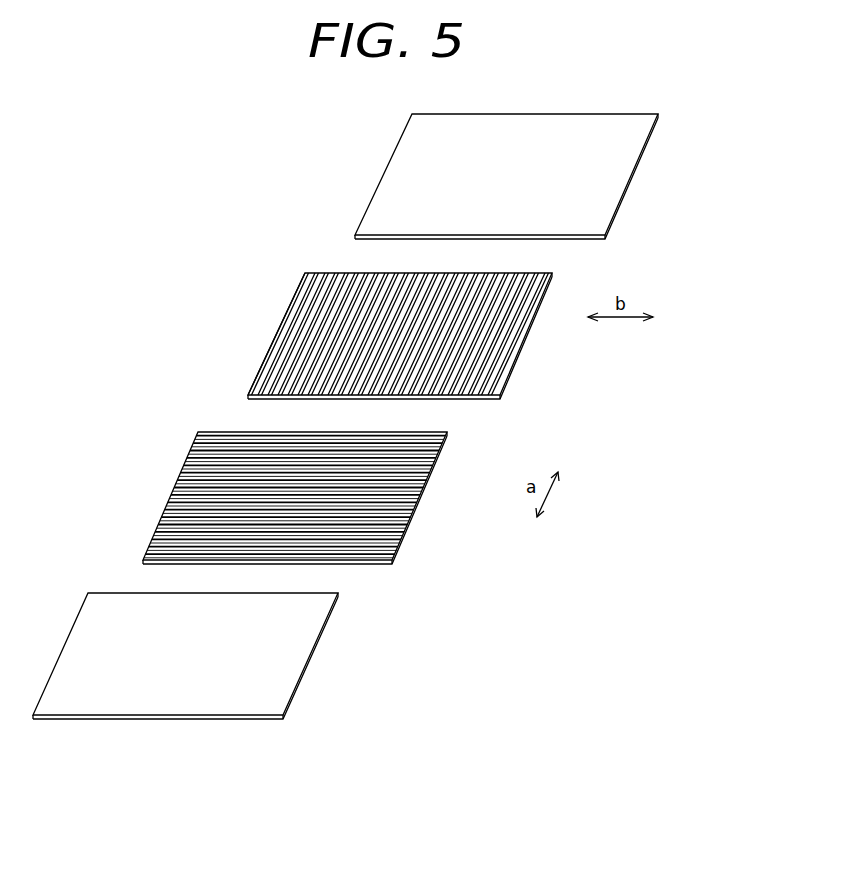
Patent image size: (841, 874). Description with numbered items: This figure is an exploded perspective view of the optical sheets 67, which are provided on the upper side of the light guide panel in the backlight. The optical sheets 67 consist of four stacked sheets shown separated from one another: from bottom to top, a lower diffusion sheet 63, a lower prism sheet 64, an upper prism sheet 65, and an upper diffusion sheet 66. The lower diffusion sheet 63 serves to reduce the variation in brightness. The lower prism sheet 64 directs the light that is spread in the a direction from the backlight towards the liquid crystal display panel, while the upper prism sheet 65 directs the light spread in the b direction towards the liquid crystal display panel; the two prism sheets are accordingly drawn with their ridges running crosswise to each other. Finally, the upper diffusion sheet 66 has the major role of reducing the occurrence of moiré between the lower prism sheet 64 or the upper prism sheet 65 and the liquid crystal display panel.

The lower diffusion sheet 63 is at (307, 663).
The lower prism sheet 64 is at (410, 523).
The upper prism sheet 65 is at (513, 365).
The upper diffusion sheet 66 is at (630, 182).
The optical sheets 67 is at (238, 237).